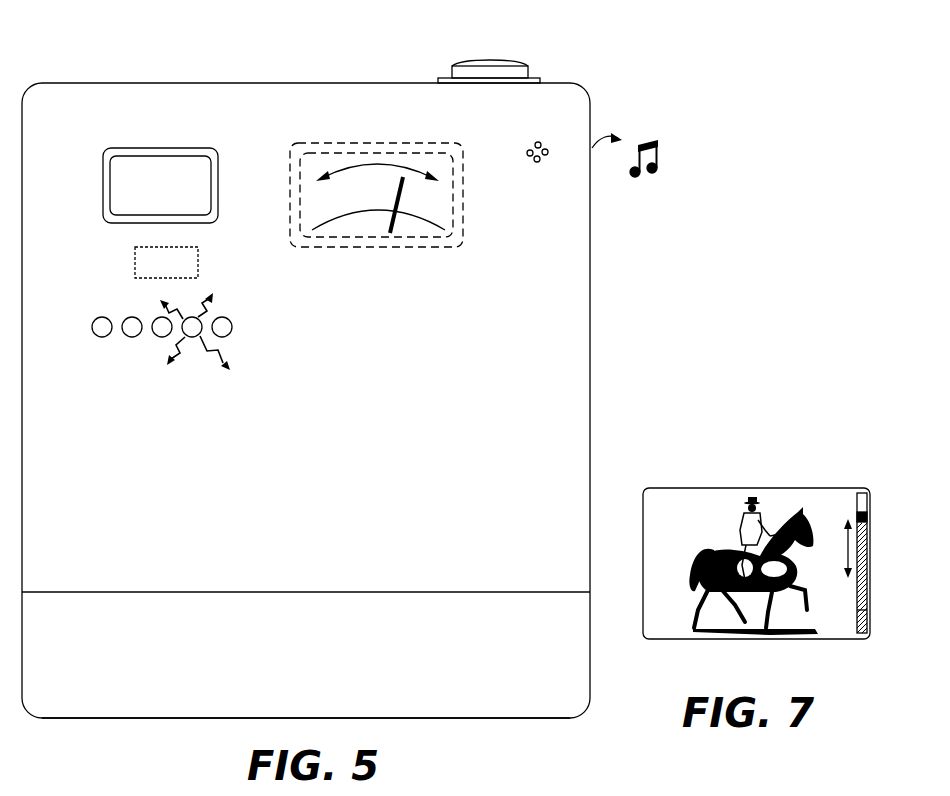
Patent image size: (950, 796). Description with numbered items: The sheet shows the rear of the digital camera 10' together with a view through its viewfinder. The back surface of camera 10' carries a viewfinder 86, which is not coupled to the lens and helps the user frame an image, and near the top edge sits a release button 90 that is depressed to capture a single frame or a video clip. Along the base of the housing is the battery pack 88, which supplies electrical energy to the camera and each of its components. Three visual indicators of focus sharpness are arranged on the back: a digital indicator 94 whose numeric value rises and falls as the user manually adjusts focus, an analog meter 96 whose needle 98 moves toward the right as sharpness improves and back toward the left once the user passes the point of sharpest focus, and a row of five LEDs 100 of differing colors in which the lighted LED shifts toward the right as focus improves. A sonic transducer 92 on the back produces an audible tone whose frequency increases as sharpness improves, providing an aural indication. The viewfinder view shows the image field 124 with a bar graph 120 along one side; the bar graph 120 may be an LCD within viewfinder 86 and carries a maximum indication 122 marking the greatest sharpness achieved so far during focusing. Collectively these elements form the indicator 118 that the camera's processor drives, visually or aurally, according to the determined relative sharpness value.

In FIG. 5, the camera 10' is at (360, 400).
In FIG. 5, the viewfinder 86 is at (108, 189).
In FIG. 5, the battery pack 88 is at (592, 687).
In FIG. 5, the release button 90 is at (527, 73).
In FIG. 5, the sonic transducer 92 is at (590, 150).
In FIG. 5, the digital indicator 94 is at (134, 264).
In FIG. 5, the analog meter 96 is at (450, 178).
In FIG. 5, the needle 98 is at (400, 200).
In FIG. 5, the LEDs 100 is at (156, 335).
In FIG. 7, the indicator 118 is at (858, 493).
In FIG. 7, the bar graph 120 is at (856, 622).
In FIG. 7, the maximum indication 122 is at (857, 514).
In FIG. 7, the image field 124 is at (673, 491).